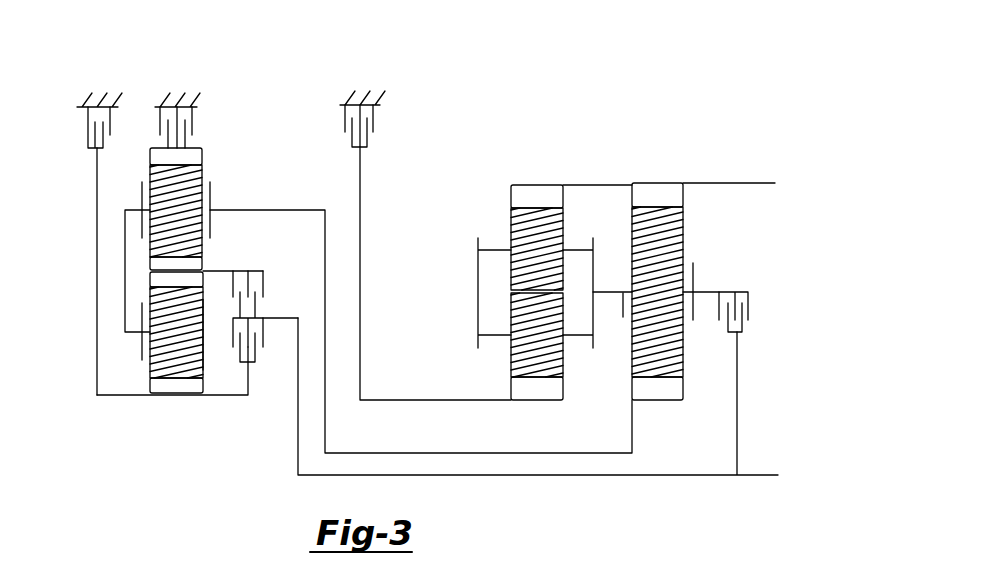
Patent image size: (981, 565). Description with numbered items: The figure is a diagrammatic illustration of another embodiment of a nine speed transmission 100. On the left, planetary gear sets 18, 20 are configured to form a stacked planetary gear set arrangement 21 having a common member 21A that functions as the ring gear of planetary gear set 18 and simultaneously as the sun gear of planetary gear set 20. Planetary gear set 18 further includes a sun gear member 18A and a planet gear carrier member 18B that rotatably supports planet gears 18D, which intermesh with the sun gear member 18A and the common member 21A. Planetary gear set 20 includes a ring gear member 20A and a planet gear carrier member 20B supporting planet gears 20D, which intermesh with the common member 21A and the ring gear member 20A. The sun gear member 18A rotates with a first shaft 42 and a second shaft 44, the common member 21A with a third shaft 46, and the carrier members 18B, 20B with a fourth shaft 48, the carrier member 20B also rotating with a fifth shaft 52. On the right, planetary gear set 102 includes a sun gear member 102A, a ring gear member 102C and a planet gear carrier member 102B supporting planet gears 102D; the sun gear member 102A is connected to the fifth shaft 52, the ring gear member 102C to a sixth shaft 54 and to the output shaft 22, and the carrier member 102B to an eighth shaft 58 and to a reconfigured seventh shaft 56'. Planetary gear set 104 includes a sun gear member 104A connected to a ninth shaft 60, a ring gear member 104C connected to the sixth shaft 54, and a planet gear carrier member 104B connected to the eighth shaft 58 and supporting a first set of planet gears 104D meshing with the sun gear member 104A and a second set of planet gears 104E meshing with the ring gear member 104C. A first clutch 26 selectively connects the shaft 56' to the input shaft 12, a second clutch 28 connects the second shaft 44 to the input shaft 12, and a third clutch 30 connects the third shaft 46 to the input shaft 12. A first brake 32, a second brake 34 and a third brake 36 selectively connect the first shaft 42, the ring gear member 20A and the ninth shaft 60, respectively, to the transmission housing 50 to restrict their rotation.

The input shaft 12 is at (505, 476).
The planetary gear set 18 is at (146, 373).
The sun gear member 18A is at (162, 390).
The planet gear carrier member 18B is at (142, 348).
The planet gears 18D is at (204, 357).
The planetary gear set 20 is at (151, 185).
The ring gear member 20A is at (204, 147).
The planet gear carrier member 20B is at (211, 195).
The planet gears 20D is at (150, 255).
The stacked planetary gear set arrangement 21 is at (151, 158).
The common member 21A is at (150, 273).
The output shaft 22 is at (755, 183).
The first clutch 26 is at (752, 304).
The second clutch 28 is at (264, 348).
The third clutch 30 is at (264, 277).
The first brake 32 is at (88, 127).
The second brake 34 is at (192, 120).
The third brake 36 is at (374, 116).
The first shaft or interconnecting member 42 is at (97, 193).
The second shaft or interconnecting member 44 is at (215, 397).
The third shaft or interconnecting member 46 is at (235, 270).
The fourth shaft or interconnecting member 48 is at (125, 319).
The transmission housing 50 is at (87, 104).
The fifth shaft or interconnecting member 52 is at (328, 208).
The sixth shaft or interconnecting member 54 is at (588, 183).
The reconfigured seventh shaft or interconnecting member 56' is at (701, 329).
The eighth shaft or interconnecting member 58 is at (605, 294).
The ninth shaft or interconnecting member 60 is at (361, 300).
The nine speed transmission 100 is at (580, 64).
The planetary gear set 102 is at (700, 277).
The sun gear member 102A is at (666, 393).
The planet gear carrier member 102B is at (623, 270).
The ring gear member 102C is at (677, 197).
The planet gears 102D is at (684, 233).
The planetary gear set 104 is at (490, 285).
The sun gear member 104A is at (545, 393).
The planet gear carrier member 104B is at (478, 313).
The ring gear member 104C is at (522, 192).
The first set of planet gears 104D is at (513, 360).
The second set of planet gears 104E is at (510, 228).